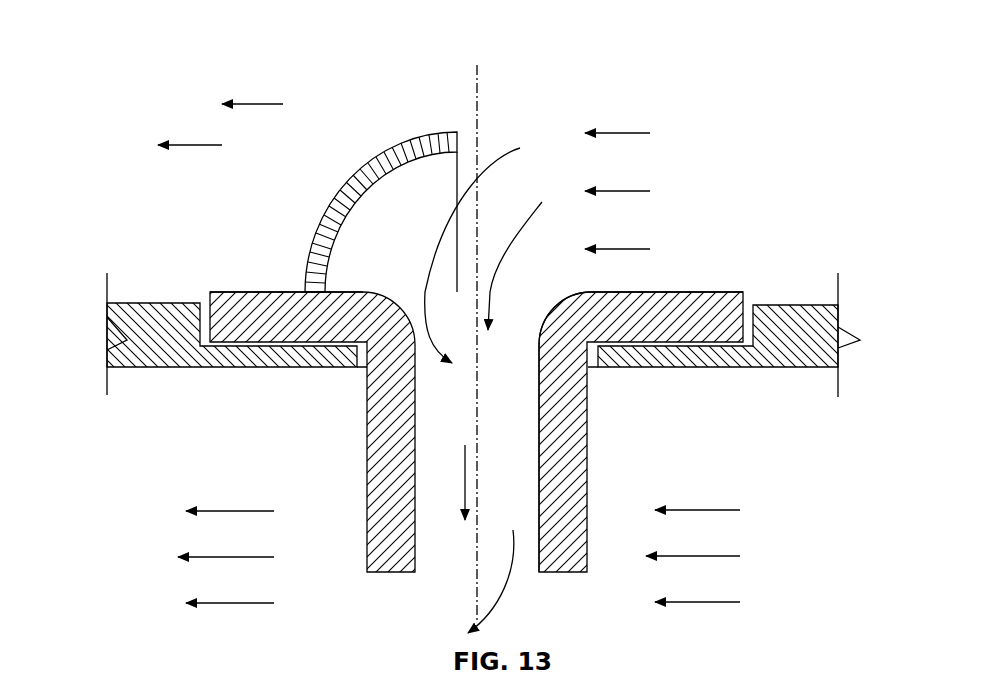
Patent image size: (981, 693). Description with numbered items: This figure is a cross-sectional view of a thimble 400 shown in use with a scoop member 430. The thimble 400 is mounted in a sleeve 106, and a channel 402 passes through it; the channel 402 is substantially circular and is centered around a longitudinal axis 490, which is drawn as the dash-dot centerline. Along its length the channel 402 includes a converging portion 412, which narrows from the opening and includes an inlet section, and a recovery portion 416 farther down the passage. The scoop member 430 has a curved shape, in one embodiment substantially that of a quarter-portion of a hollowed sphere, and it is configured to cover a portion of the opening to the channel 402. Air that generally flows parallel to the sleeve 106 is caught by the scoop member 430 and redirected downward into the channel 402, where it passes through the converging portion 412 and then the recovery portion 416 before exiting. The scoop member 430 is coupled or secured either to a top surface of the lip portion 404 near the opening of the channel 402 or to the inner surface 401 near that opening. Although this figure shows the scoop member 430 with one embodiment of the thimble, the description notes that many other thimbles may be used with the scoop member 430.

The thimble 400 is at (218, 66).
The sleeve 106 is at (789, 312).
The lip portion 404 is at (244, 292).
The inner surface 401 is at (375, 292).
The converging portion 412 is at (535, 353).
The recovery portion 416 is at (535, 507).
The channel 402 is at (467, 430).
The scoop member 430 is at (352, 160).
The longitudinal axis 490 is at (479, 80).